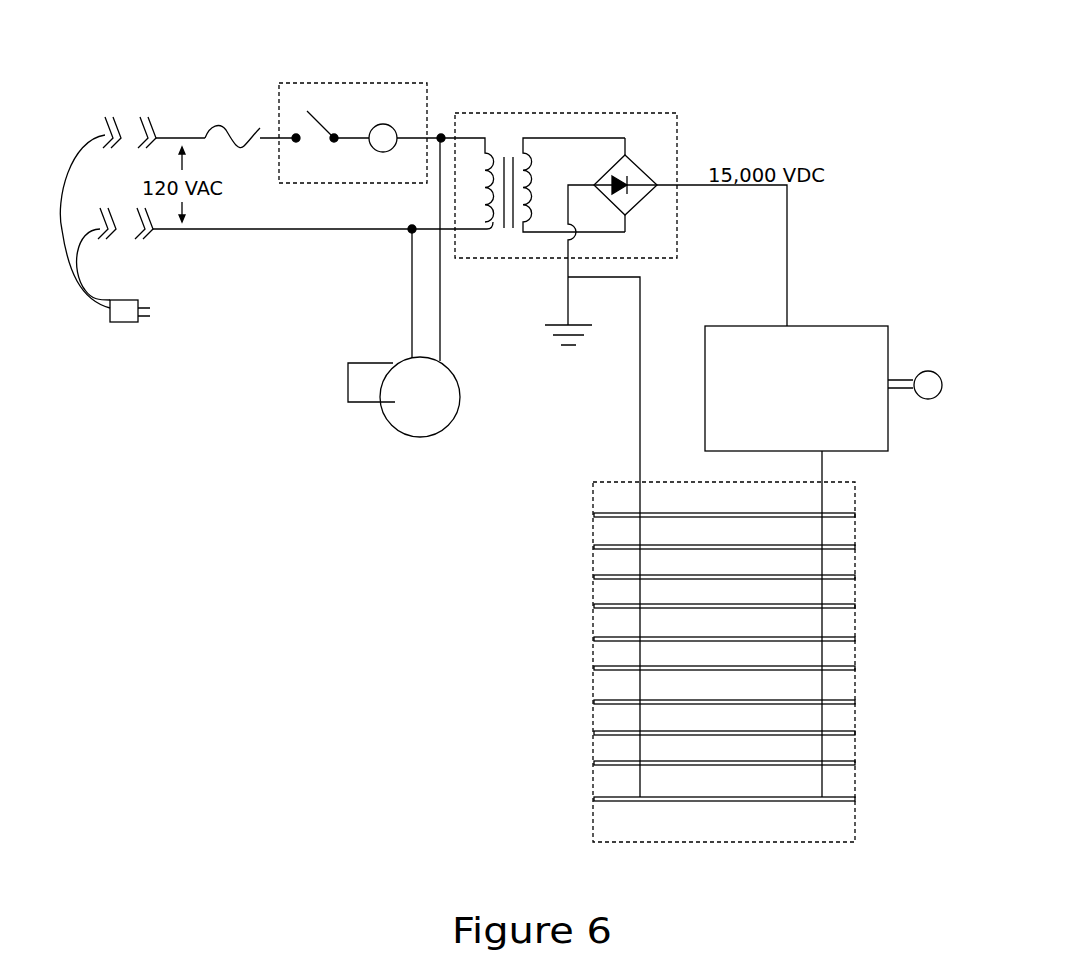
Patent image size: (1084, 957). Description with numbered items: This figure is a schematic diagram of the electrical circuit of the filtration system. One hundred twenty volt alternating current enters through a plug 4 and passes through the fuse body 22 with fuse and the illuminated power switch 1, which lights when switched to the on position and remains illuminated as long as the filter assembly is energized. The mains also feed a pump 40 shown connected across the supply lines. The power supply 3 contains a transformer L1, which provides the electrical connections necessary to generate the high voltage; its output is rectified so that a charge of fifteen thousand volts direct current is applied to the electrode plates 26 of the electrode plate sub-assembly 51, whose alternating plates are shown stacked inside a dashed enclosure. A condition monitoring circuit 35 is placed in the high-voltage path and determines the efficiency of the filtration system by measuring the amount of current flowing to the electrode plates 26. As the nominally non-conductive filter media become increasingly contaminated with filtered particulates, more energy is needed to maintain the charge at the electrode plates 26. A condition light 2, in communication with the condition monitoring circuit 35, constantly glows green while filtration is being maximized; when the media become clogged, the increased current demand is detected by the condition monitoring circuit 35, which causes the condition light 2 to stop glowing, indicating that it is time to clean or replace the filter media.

The illuminated power switch 1 is at (399, 83).
The condition light 2 is at (928, 368).
The power supply 3 is at (559, 138).
The power plug 4 is at (127, 300).
The fuse body 22 is at (207, 128).
The electrode plates 26 is at (683, 510).
The condition monitoring circuit 35 is at (808, 326).
The pump 40 is at (425, 415).
The electrode plate sub-assembly 51 is at (697, 662).
The transformer L1 is at (512, 146).